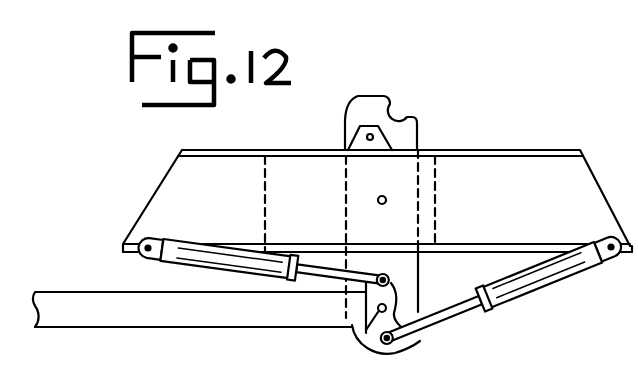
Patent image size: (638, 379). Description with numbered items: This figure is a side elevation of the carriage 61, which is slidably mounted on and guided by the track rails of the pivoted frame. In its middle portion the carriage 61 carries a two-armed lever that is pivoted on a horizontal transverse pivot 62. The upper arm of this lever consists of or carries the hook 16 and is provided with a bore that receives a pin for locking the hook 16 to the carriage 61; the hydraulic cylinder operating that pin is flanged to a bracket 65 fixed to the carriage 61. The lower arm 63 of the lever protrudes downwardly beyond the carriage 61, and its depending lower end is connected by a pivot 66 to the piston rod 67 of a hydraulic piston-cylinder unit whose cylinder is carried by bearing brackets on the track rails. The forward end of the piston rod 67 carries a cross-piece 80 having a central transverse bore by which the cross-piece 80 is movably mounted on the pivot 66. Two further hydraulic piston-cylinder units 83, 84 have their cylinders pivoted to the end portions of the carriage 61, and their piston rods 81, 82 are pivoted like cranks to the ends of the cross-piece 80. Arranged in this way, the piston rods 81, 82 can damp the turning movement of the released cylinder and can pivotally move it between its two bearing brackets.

The hook 16 is at (362, 107).
The carriage 61 is at (488, 168).
The horizontal transverse pivot 62 is at (377, 198).
The lower arm 63 is at (418, 272).
The bracket 65 is at (362, 139).
The pivot 66 is at (363, 340).
The piston rod 67 is at (226, 317).
The cross-piece 80 is at (403, 341).
The piston rod 81 is at (446, 322).
The piston rod 82 is at (353, 270).
The hydraulic piston-cylinder unit 83 is at (556, 288).
The hydraulic piston-cylinder unit 84 is at (201, 241).